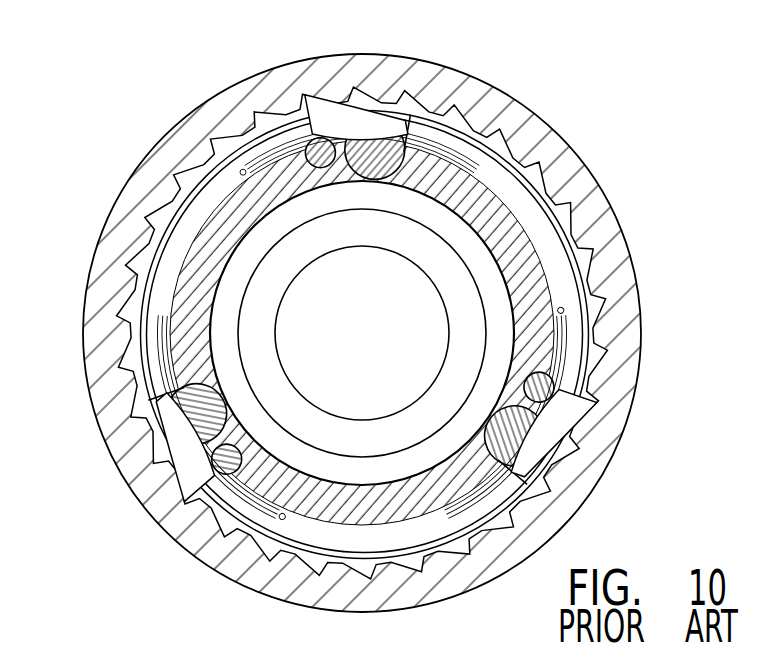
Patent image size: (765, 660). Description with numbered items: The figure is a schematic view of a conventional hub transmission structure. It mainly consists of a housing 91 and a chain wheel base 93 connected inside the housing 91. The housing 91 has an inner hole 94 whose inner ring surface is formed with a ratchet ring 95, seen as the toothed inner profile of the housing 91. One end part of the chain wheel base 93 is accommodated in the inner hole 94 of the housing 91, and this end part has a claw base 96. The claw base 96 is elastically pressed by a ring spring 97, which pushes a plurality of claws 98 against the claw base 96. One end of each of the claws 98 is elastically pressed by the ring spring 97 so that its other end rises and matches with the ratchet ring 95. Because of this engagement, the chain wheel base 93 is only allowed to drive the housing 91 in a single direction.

The housing 91 is at (100, 238).
The chain wheel base 93 is at (458, 230).
The inner hole 94 is at (396, 98).
The ratchet ring 95 is at (213, 147).
The claw base 96 is at (466, 140).
The ring spring 97 is at (432, 130).
The claws 98 is at (322, 92).